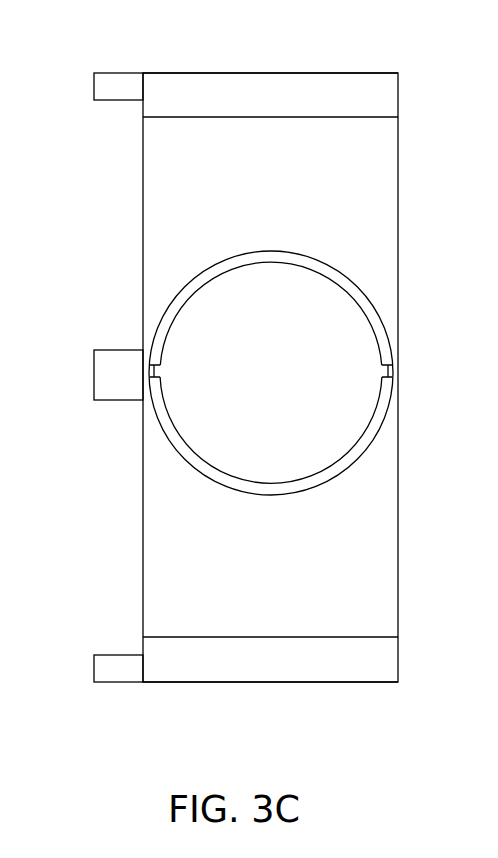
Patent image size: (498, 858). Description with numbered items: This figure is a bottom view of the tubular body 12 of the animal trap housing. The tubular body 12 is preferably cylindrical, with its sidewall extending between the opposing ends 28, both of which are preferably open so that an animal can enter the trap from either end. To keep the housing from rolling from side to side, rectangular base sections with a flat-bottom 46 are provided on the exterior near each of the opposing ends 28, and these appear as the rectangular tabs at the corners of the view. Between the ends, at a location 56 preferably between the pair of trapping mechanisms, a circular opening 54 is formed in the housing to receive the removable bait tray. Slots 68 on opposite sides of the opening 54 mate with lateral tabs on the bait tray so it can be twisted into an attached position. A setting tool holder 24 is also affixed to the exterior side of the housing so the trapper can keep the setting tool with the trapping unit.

The tubular body 12 is at (163, 460).
The setting tool holder 24 is at (105, 365).
The opposing ends 28 is at (338, 73).
The flat-bottom 46 is at (177, 90).
The opening 54 is at (357, 398).
The location 56 is at (117, 426).
The slots 68 is at (390, 365).